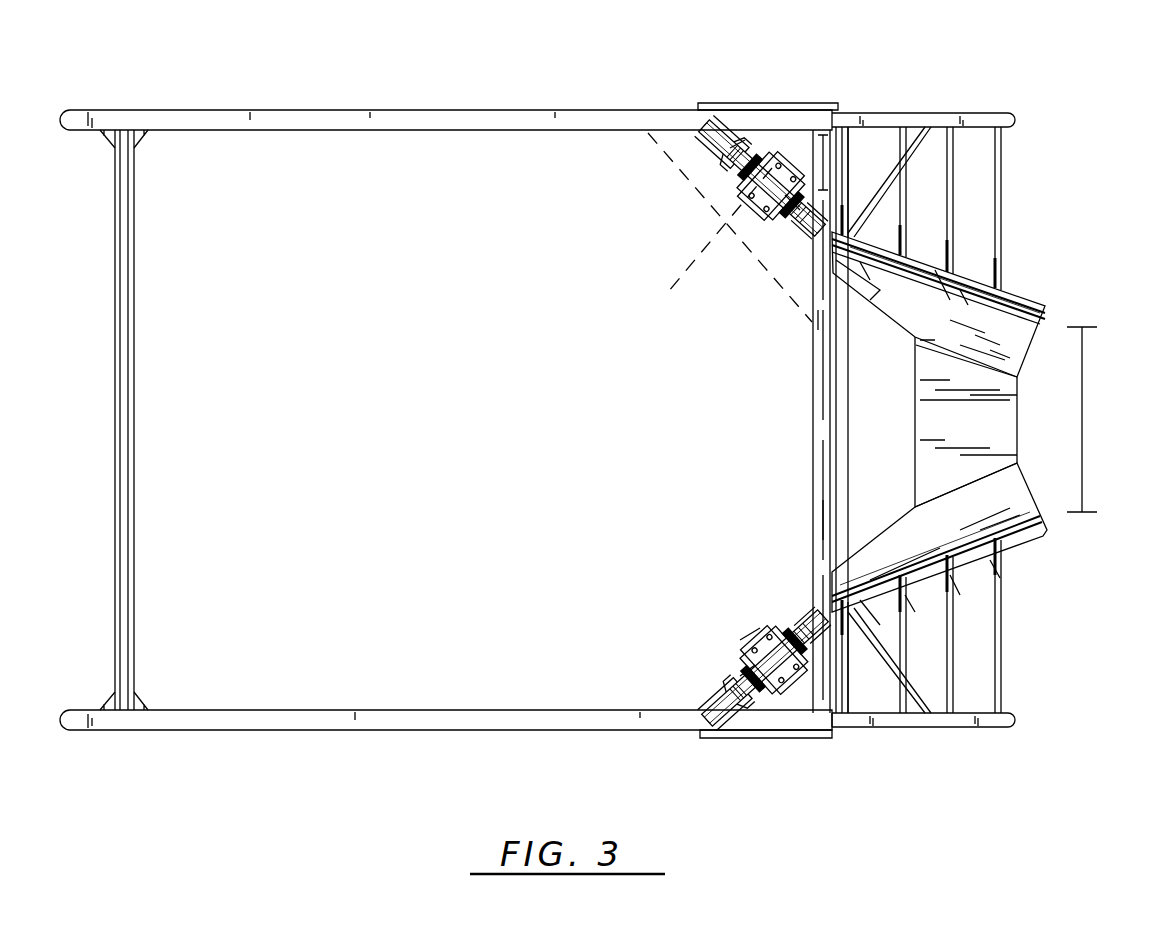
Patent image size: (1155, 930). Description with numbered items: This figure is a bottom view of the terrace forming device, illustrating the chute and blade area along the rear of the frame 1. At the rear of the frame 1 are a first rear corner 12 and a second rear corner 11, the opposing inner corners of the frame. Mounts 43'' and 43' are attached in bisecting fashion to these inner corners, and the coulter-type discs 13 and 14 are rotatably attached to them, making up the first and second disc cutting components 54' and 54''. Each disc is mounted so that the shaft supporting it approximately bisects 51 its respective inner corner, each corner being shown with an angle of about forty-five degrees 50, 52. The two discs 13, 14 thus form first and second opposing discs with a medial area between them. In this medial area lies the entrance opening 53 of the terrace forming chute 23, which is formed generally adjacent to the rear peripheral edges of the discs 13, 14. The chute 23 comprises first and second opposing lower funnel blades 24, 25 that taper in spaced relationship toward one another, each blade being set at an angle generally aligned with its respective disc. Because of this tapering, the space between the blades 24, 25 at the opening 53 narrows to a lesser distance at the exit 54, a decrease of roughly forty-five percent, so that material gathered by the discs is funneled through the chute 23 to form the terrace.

The frame 1 is at (409, 109).
The second rear corner 11 is at (841, 732).
The first rear corner 12 is at (840, 105).
The disc 13 is at (720, 740).
The disc 14 is at (792, 205).
The terrace forming chute 23 is at (914, 373).
The lower funnel blade 24 is at (1030, 540).
The lower funnel blade 25 is at (1022, 300).
The mount 43' is at (765, 705).
The mount 43'' is at (762, 131).
The forty-five degree angle 50 is at (805, 608).
The bisecting line 51 is at (682, 321).
The forty-five degree angle 52 is at (669, 226).
The opening 53 is at (902, 441).
The exit 54 is at (1110, 419).
The first disc cutting component 54' is at (644, 173).
The second disc cutting component 54'' is at (685, 683).